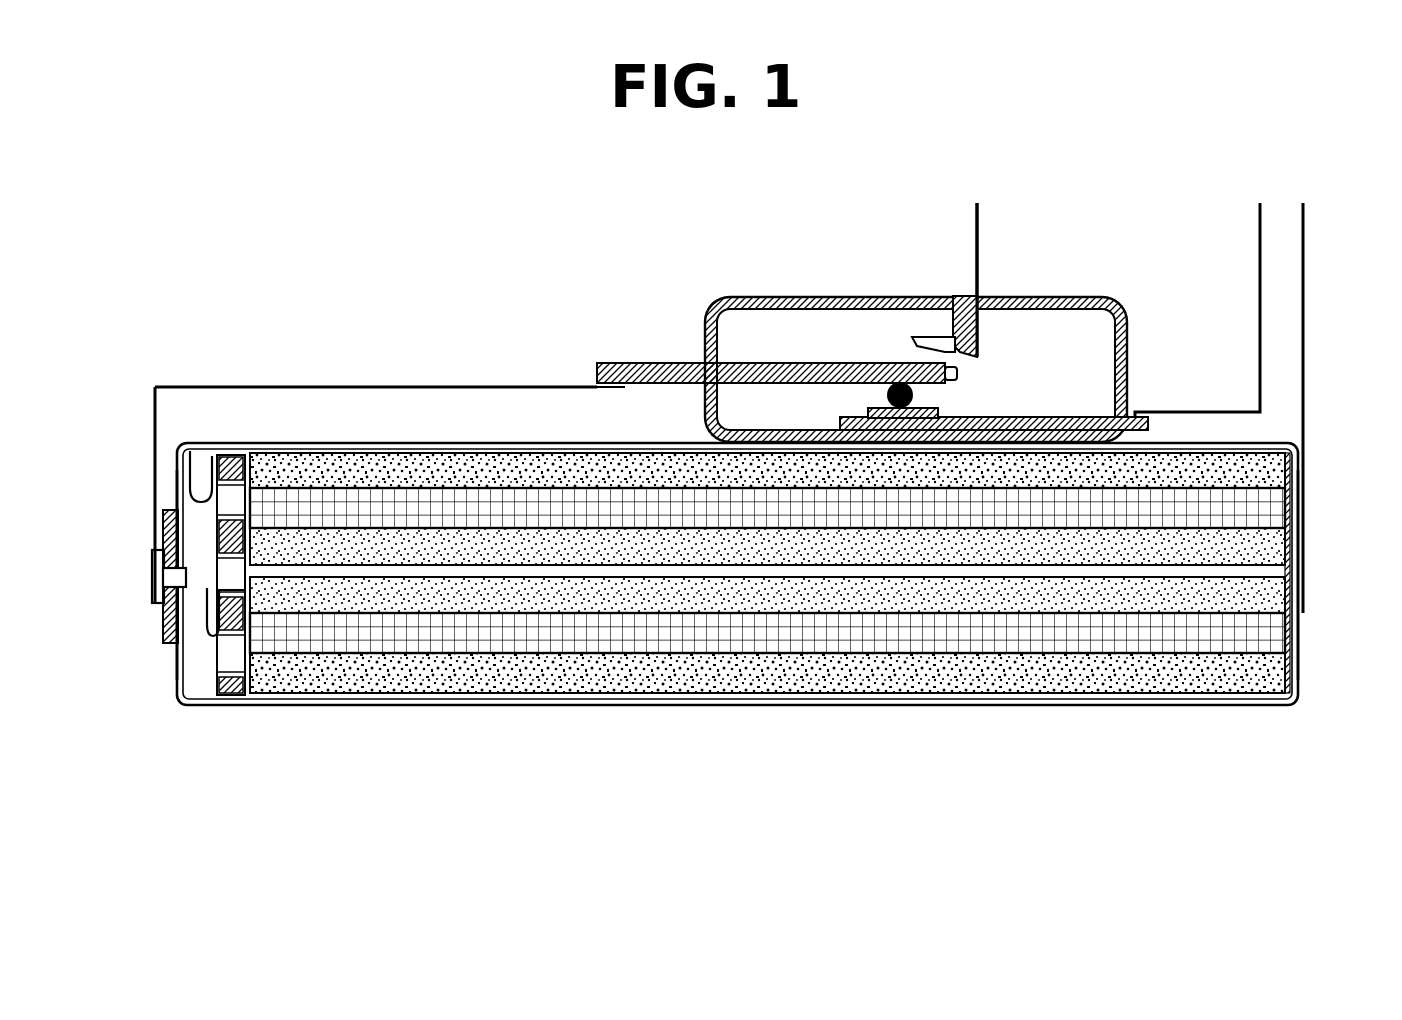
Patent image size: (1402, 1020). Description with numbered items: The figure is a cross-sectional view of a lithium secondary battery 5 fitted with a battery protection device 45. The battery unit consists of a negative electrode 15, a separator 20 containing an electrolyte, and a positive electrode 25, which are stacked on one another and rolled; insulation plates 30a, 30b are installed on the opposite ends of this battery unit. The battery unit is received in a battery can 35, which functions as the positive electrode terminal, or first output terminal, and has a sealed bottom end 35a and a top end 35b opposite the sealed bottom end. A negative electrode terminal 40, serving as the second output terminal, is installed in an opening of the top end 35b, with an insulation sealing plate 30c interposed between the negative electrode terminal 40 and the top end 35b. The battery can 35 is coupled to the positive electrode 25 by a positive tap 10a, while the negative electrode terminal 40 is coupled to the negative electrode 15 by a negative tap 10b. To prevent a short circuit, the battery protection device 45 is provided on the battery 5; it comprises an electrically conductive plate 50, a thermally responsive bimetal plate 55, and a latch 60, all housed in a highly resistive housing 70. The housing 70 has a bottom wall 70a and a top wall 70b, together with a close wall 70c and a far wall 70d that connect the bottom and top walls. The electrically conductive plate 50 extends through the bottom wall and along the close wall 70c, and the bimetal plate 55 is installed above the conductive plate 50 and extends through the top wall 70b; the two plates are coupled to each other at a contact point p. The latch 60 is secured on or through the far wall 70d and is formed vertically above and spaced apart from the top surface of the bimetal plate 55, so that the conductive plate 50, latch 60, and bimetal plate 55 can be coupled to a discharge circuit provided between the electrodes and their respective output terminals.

The lithium secondary battery 5 is at (68, 437).
The positive tap 10a is at (200, 482).
The negative tap 10b is at (204, 632).
The negative electrode 15 is at (820, 553).
The separator 20 is at (946, 510).
The positive electrode 25 is at (1072, 475).
The insulation plate 30a is at (1284, 515).
The insulation plate 30b is at (247, 622).
The insulation sealing plate 30c is at (165, 622).
The battery can 35 is at (340, 702).
The sealed bottom end 35a is at (1300, 656).
The top end 35b is at (176, 682).
The negative electrode terminal 40 is at (158, 594).
The battery protection device 45 is at (570, 440).
The electrically conductive plate 50 is at (1100, 412).
The bimetal plate 55 is at (978, 352).
The latch 60 is at (966, 296).
The housing 70 is at (752, 296).
The bottom wall 70a is at (1128, 326).
The top wall 70b is at (705, 333).
The close wall 70c is at (888, 445).
The far wall 70d is at (863, 296).
The contact point p is at (913, 392).